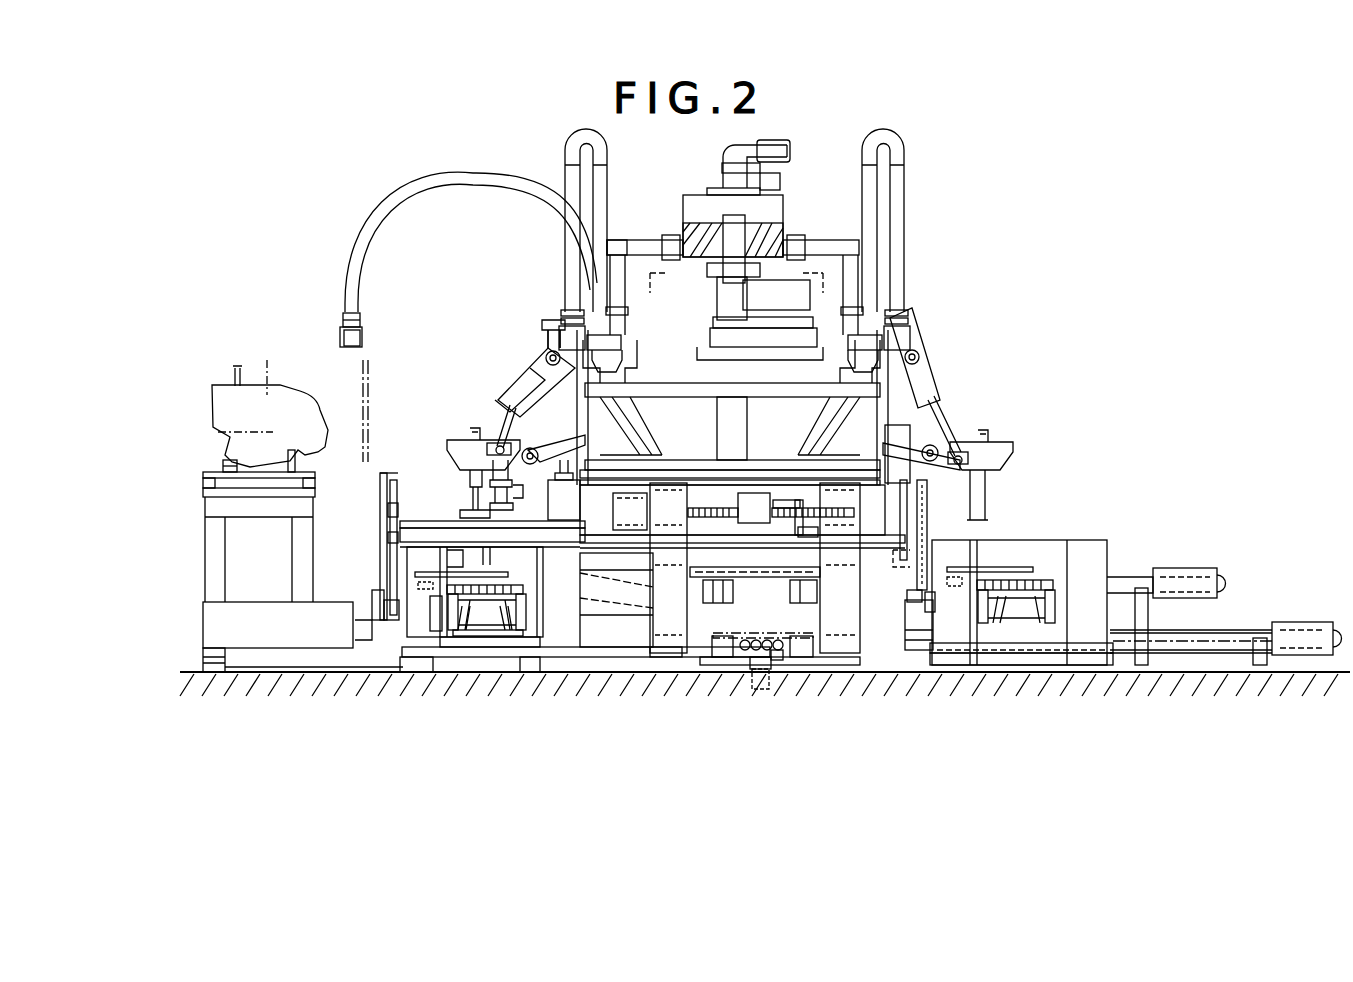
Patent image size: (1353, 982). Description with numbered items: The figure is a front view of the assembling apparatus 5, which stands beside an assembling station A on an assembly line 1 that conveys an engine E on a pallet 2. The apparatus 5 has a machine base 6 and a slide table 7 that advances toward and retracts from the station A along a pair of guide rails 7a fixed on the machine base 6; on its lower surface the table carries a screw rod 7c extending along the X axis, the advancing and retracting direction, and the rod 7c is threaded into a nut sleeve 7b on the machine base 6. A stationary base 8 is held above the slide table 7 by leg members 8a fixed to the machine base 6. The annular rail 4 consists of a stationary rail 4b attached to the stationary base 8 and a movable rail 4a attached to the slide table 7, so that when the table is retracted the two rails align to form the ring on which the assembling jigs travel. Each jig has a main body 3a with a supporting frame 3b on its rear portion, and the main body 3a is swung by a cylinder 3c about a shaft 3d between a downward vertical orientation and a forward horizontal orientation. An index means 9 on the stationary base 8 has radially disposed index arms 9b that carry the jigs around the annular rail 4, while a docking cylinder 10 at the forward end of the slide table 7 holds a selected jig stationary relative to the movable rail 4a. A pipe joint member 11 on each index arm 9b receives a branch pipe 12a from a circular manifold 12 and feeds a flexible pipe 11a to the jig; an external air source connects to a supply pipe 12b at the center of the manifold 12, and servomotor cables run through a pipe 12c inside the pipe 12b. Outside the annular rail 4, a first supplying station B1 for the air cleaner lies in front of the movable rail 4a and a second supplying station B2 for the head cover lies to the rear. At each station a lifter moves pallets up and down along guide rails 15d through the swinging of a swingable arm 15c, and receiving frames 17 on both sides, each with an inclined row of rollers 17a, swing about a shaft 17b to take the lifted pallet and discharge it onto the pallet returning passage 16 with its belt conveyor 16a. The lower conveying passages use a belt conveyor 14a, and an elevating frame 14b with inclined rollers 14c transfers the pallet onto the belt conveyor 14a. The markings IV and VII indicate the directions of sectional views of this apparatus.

The assembly line 1 is at (208, 474).
The pallet 2 is at (313, 467).
The engine E is at (270, 399).
The assembling station A is at (303, 381).
The main body 3a is at (452, 440).
The supporting frame 3b is at (583, 428).
The cylinder 3c is at (530, 378).
The shaft 3d is at (508, 444).
The annular rail 4 is at (673, 378).
The movable rail 4a is at (630, 352).
The stationary rail 4b is at (762, 460).
The assembling apparatus 5 is at (553, 323).
The machine base 6 is at (716, 530).
The slide table 7 is at (800, 490).
The guide rails 7a is at (735, 525).
The nut sleeve 7b is at (618, 530).
The screw rod 7c is at (792, 522).
The stationary base 8 is at (712, 470).
The leg members 8a is at (665, 530).
The index means 9 is at (714, 306).
The index arms 9b is at (812, 398).
The docking cylinder 10 is at (550, 507).
The pipe joint member 11 is at (608, 342).
The flexible pipe 11a is at (558, 192).
The circular manifold 12 is at (693, 195).
The branch pipes 12a is at (643, 240).
The supply pipe 12b is at (760, 240).
The pipe 12c is at (745, 228).
The belt conveyor 14a is at (1222, 630).
The elevating frame 14b is at (755, 672).
The rollers 14c is at (776, 660).
The swingable arm 15c is at (380, 625).
The guide rails 15d is at (383, 500).
The pallet returning passage 16 is at (773, 589).
The belt conveyor 16a is at (615, 597).
The receiving frames 17 is at (520, 590).
The rollers 17a is at (468, 632).
The shaft 17b is at (418, 672).
The first supplying station B1 is at (446, 462).
The second supplying station B2 is at (1006, 482).
The X axis X is at (455, 411).
The section IV is at (560, 390).
The section VII is at (355, 545).